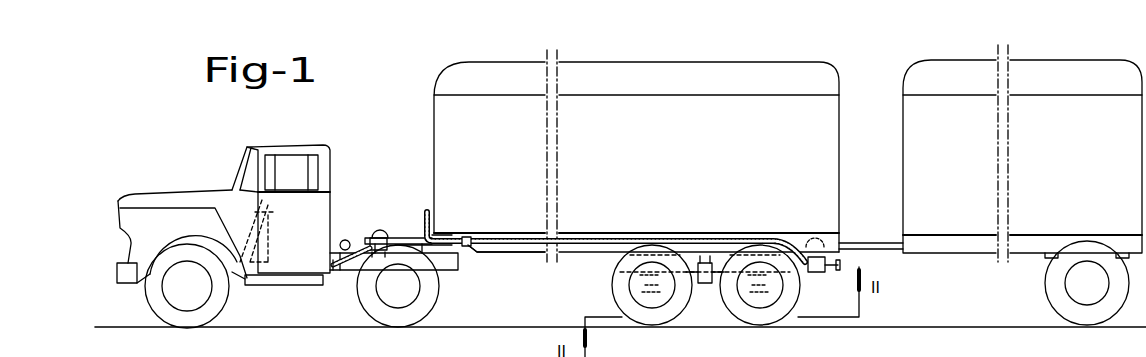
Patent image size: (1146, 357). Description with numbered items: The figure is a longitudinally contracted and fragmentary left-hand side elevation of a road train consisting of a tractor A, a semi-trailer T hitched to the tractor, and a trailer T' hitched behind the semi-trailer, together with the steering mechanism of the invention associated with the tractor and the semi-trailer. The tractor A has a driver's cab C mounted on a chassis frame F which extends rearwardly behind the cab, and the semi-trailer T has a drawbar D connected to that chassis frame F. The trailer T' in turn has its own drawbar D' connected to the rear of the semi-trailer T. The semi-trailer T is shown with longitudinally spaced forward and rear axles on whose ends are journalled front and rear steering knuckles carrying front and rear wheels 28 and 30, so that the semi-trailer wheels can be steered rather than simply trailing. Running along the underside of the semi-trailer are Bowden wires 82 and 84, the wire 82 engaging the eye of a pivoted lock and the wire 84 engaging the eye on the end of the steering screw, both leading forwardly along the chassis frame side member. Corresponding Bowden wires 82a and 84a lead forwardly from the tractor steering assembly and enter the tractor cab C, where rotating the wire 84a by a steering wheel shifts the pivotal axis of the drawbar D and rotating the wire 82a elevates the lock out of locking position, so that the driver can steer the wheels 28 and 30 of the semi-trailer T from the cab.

The tractor A is at (205, 170).
The driver's cab C is at (302, 144).
The drawbar D is at (408, 225).
The drawbar D' is at (855, 240).
The semi-trailer T is at (665, 170).
The trailer T' is at (1022, 173).
The chassis frame F is at (456, 271).
The front wheels 28 is at (620, 294).
The rear wheels 30 is at (797, 293).
The Bowden wire 82 is at (538, 247).
The Bowden wire 82a is at (343, 242).
The Bowden wire 84 is at (520, 252).
The Bowden wire 84a is at (346, 268).